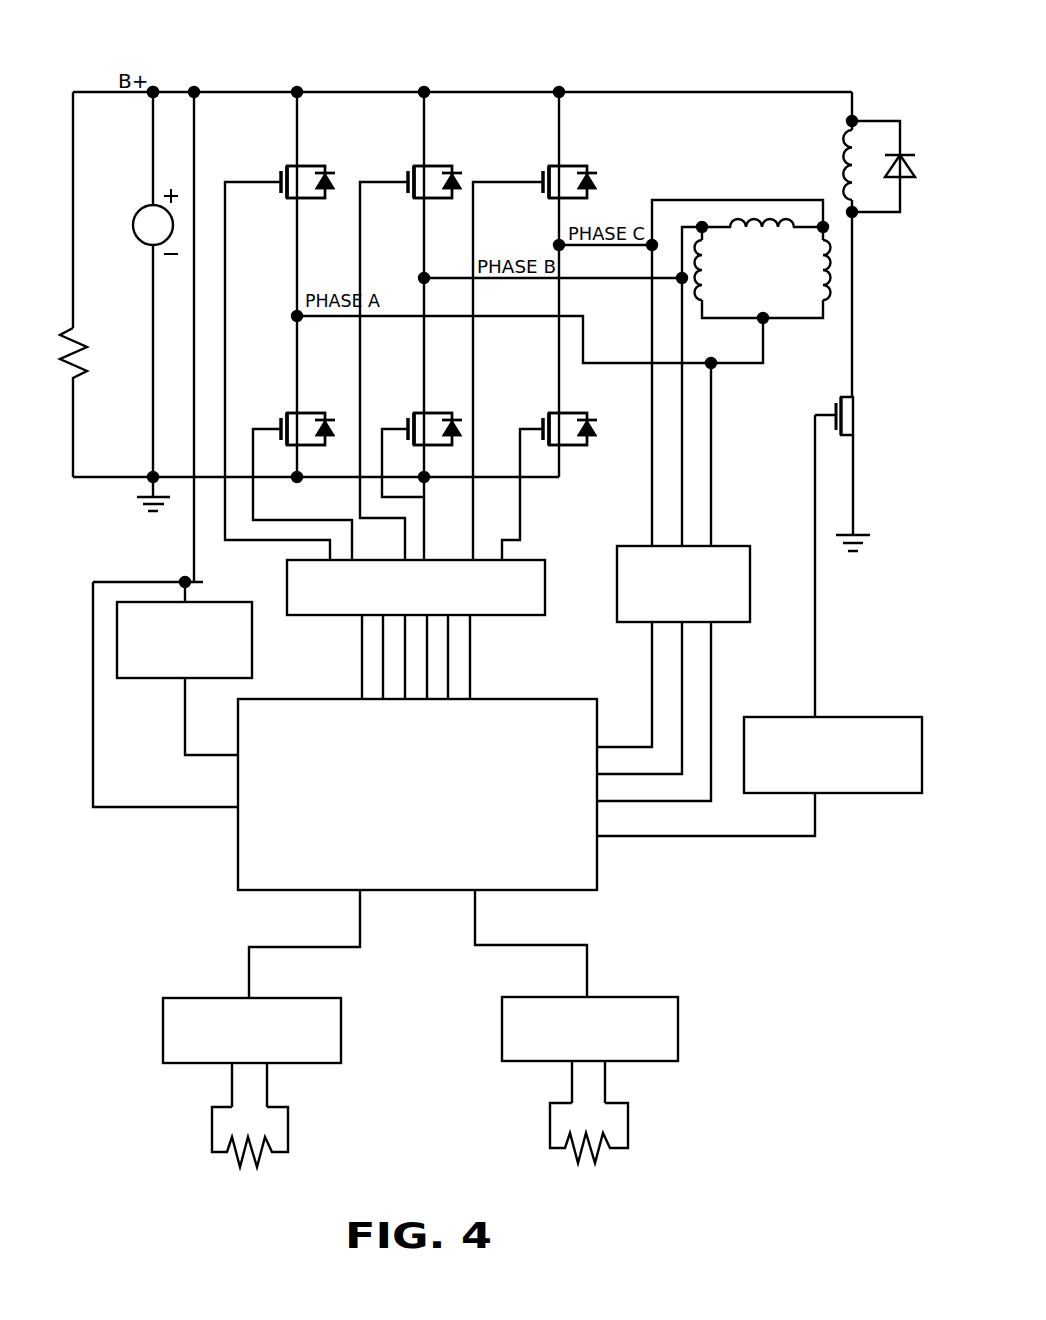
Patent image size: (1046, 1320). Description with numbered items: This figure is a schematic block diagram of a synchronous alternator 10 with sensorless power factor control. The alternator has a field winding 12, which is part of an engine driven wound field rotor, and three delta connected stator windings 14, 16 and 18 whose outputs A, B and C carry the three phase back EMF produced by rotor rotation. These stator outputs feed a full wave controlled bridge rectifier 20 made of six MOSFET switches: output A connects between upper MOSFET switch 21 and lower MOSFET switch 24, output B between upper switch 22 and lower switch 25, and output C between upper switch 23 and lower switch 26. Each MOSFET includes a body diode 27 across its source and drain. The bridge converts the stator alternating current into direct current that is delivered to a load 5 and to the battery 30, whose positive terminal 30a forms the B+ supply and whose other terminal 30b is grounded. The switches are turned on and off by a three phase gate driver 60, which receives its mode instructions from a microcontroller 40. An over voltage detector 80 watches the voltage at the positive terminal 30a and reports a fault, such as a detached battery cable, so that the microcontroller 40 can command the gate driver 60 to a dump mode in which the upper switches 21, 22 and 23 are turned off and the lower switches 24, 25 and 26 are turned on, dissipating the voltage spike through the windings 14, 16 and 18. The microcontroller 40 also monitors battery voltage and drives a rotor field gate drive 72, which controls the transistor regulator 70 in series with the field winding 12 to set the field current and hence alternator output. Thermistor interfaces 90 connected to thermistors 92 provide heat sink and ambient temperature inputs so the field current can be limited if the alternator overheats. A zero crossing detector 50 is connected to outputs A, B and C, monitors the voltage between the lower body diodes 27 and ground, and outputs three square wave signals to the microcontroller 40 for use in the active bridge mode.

The load resistor 5 is at (80, 328).
The synchronous alternator 10 is at (545, 83).
The field winding 12 is at (858, 157).
The stator winding 14 is at (695, 278).
The stator winding 16 is at (760, 223).
The stator winding 18 is at (832, 277).
The full wave controlled bridge rectifier 20 is at (395, 173).
The upper MOSFET switch 21 is at (282, 200).
The upper MOSFET switch 22 is at (408, 198).
The upper MOSFET switch 23 is at (553, 198).
The lower MOSFET switch 24 is at (287, 410).
The lower MOSFET switch 25 is at (415, 410).
The lower MOSFET switch 26 is at (552, 410).
The body diode 27 is at (338, 175).
The battery 30 is at (137, 213).
The positive terminal 30a is at (155, 90).
The battery negative terminal ground 30b is at (151, 473).
The microcontroller 40 is at (255, 848).
The zero crossing detector 50 is at (730, 555).
The three phase gate driver 60 is at (518, 603).
The transistor regulator 70 is at (838, 400).
The rotor field gate drive 72 is at (870, 783).
The over voltage detector 80 is at (248, 637).
The thermistor interface 90 is at (305, 1003).
The thermistor 92 is at (247, 1137).